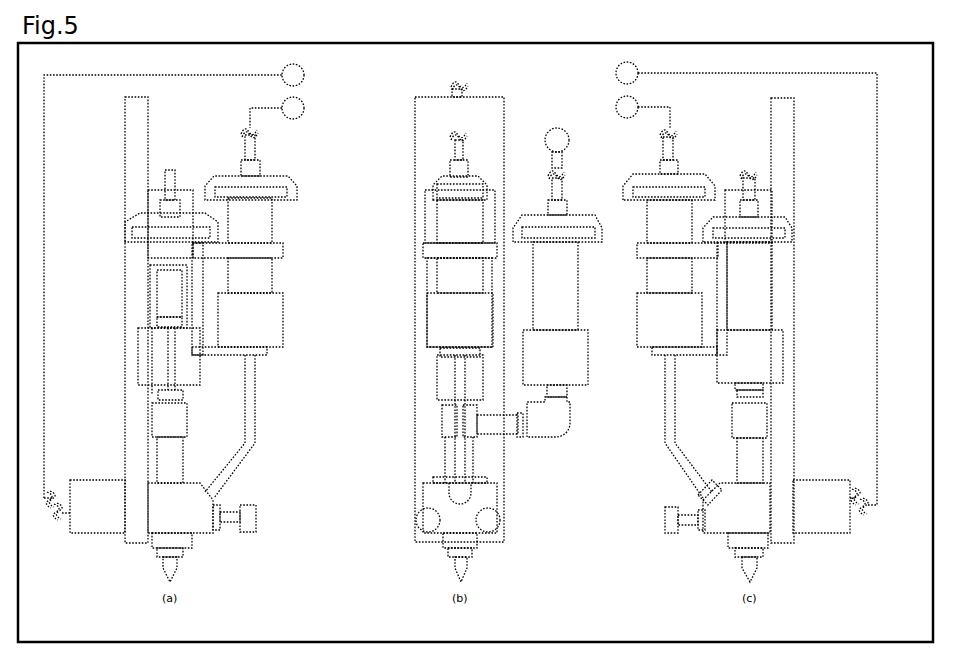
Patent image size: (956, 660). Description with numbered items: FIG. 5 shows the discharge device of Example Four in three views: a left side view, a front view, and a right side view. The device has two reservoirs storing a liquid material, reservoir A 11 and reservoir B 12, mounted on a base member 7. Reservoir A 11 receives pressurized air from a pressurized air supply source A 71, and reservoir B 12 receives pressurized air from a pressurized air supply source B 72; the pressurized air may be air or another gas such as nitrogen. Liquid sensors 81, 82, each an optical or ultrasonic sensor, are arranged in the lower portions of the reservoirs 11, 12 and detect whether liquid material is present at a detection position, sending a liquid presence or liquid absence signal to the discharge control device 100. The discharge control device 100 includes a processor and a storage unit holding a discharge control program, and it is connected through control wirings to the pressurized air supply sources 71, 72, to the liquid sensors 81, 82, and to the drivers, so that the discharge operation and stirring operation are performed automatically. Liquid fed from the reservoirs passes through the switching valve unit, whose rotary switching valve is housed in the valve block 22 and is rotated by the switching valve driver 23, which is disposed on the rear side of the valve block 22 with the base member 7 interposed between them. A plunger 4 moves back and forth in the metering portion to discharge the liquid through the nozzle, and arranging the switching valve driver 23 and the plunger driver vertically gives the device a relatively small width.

The discharge control device 100 is at (304, 72).
The pressurized air supply source A 71 is at (304, 105).
The pressurized air supply source B 72 is at (551, 129).
The base member 7 is at (133, 412).
The reservoir A 11 is at (458, 281).
The reservoir B 12 is at (573, 300).
The liquid sensor 81 is at (452, 322).
The liquid sensor 82 is at (200, 373).
The valve block 22 is at (203, 528).
The switching valve driver 23 is at (100, 510).
The plunger 4 is at (563, 437).